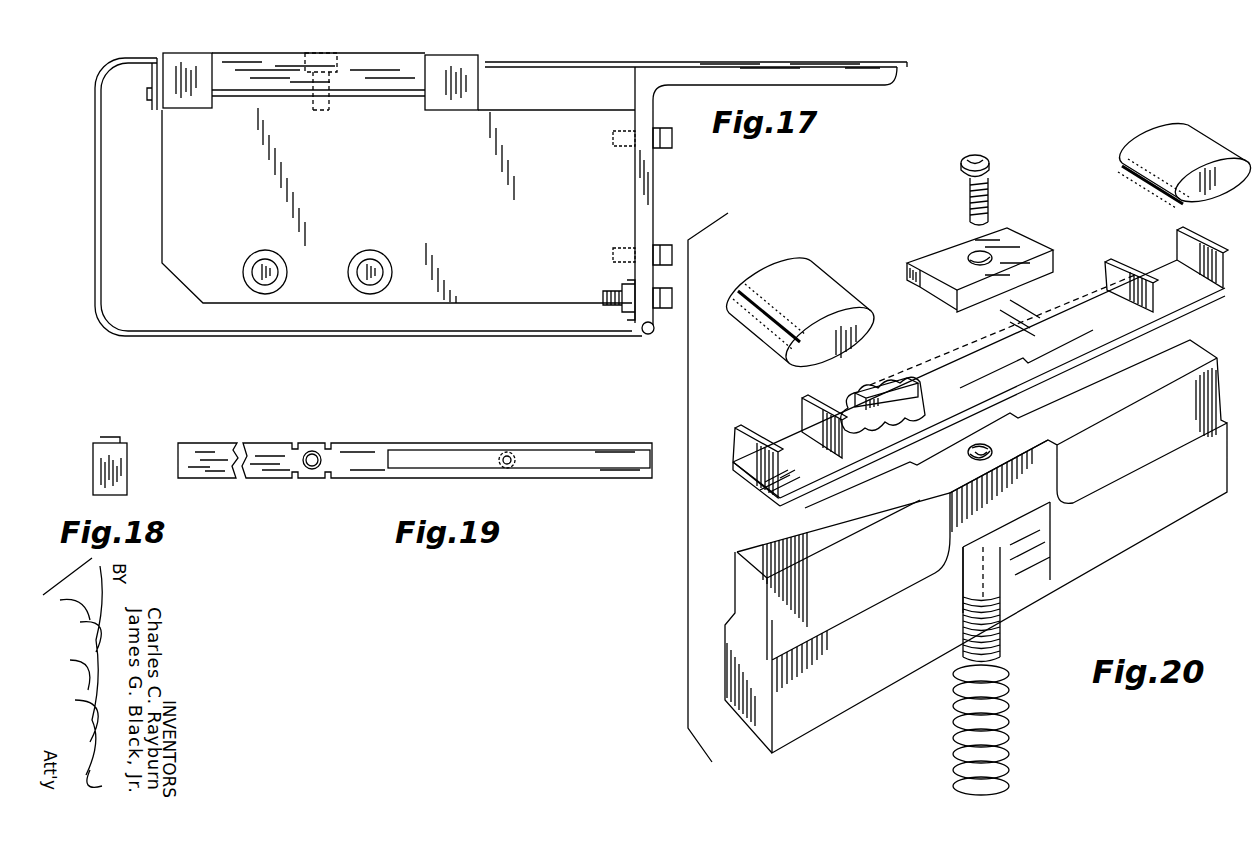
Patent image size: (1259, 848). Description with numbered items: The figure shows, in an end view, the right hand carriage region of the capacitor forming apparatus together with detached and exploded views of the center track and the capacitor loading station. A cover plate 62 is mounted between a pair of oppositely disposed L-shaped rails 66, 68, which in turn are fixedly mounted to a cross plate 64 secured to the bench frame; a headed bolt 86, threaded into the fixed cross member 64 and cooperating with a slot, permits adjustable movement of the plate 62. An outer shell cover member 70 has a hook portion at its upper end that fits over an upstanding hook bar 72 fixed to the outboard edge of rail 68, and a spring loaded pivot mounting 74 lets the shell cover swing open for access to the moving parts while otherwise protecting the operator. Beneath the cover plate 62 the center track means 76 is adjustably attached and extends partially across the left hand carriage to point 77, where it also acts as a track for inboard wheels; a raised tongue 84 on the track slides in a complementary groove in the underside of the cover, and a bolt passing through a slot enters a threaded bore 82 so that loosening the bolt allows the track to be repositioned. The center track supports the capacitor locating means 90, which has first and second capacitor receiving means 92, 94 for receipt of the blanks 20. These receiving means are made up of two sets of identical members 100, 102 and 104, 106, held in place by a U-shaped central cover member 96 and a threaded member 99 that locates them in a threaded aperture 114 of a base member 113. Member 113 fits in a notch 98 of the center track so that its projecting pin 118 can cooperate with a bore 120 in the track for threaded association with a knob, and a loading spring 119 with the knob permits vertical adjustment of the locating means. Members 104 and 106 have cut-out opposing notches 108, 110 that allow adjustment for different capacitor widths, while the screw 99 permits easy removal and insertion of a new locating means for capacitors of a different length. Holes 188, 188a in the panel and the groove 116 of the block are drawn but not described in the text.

In FIG. 20, the blanks 20 is at (778, 278).
In FIG. 17, the cover plate 62 is at (372, 66).
In FIG. 17, the cross plate 64 is at (553, 137).
In FIG. 17, the L-shaped rail 66 is at (468, 67).
In FIG. 17, the L-shaped rail 68 is at (178, 66).
In FIG. 17, the outer shell cover member 70 is at (95, 177).
In FIG. 17, the hook bar 72 is at (148, 79).
In FIG. 17, the spring loaded pivot mounting 74 is at (650, 336).
In FIG. 18, the center track means 76 is at (82, 472).
In FIG. 19, the center track means 76 is at (381, 446).
In FIG. 19, the end point of center track 77 is at (178, 456).
In FIG. 19, the threaded bore 82 is at (508, 452).
In FIG. 18, the raised tongue 84 is at (108, 437).
In FIG. 19, the raised tongue 84 is at (432, 459).
In FIG. 17, the headed bolt 86 is at (333, 108).
In FIG. 20, the capacitor locating means 90 is at (904, 236).
In FIG. 20, the first capacitor receiving means 92 is at (1142, 250).
In FIG. 20, the second capacitor receiving means 94 is at (766, 424).
In FIG. 20, the U-shaped central cover member 96 is at (1023, 252).
In FIG. 19, the notch 98 is at (306, 486).
In FIG. 20, the threaded member 99 is at (997, 181).
In FIG. 20, the receiving member 100 is at (793, 478).
In FIG. 20, the receiving member 102 is at (1184, 282).
In FIG. 20, the receiving member 104 is at (1097, 300).
In FIG. 20, the receiving member 106 is at (838, 410).
In FIG. 20, the cut-out notch 108 is at (963, 339).
In FIG. 20, the cut-out notch 110 is at (995, 365).
In FIG. 20, the member 113 is at (829, 700).
In FIG. 20, the threaded aperture 114 is at (990, 445).
In FIG. 20, the groove 116 is at (802, 600).
In FIG. 20, the projecting pin 118 is at (964, 664).
In FIG. 20, the loading spring 119 is at (1011, 748).
In FIG. 19, the bore 120 is at (312, 449).
In FIG. 17, the hole 188 is at (366, 282).
In FIG. 17, the hole 188a is at (258, 278).